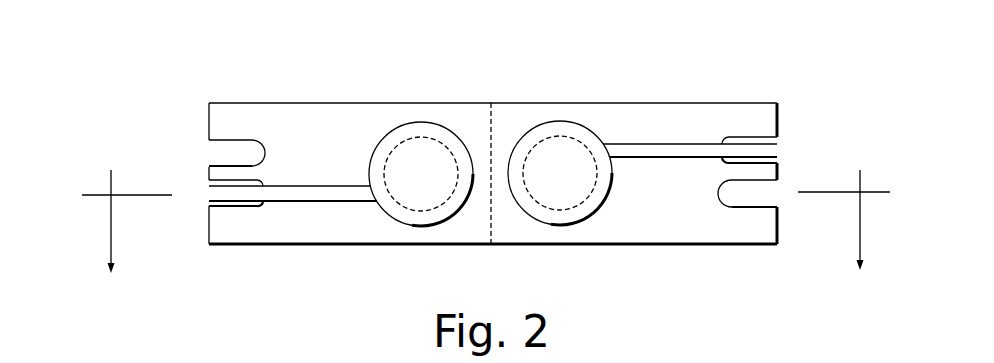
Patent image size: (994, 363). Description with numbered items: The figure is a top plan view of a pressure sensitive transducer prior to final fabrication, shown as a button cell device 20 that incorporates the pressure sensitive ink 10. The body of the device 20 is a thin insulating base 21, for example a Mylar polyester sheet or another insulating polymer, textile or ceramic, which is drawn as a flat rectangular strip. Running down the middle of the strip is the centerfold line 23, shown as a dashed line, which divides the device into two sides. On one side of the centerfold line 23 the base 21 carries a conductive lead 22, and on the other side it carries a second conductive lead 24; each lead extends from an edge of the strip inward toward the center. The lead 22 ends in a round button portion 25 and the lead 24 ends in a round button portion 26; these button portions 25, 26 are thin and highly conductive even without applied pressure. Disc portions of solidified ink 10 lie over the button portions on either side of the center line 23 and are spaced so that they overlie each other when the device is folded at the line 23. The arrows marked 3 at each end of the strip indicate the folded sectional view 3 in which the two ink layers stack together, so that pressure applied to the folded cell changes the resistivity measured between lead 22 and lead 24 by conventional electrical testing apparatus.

The pressure sensitive ink 10 is at (513, 138).
The device 20 is at (493, 162).
The base 21 is at (342, 216).
The conductive lead 22 is at (336, 181).
The centerfold line 23 is at (494, 136).
The second conductive lead 24 is at (684, 141).
The round button portion 25 is at (430, 121).
The round button portion 26 is at (550, 120).
The section line 3- 3 is at (486, 209).